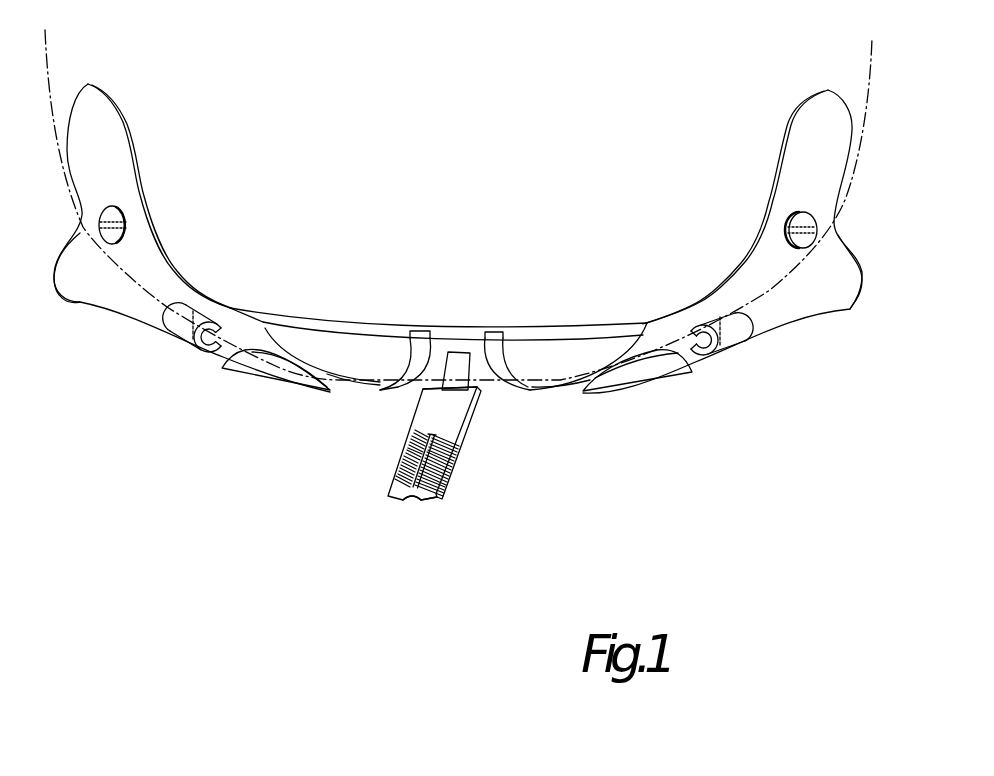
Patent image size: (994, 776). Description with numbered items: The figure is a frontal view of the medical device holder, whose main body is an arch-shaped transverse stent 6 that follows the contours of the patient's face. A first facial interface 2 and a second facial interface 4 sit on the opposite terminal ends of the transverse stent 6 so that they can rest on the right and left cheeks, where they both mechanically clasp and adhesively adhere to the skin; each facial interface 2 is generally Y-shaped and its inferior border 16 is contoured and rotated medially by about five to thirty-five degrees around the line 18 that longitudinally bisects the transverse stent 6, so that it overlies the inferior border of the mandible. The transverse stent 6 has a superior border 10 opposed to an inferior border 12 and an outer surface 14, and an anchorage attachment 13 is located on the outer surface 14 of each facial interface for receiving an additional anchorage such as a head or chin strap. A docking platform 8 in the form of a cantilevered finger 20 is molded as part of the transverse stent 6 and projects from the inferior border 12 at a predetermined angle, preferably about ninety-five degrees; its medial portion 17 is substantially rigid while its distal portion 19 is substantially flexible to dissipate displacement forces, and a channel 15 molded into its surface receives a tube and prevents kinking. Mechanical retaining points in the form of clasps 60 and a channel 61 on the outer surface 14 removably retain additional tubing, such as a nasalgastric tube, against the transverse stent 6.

The first facial interface 2 is at (116, 156).
The second facial interface 4 is at (834, 148).
The transverse stent 6 is at (369, 367).
The docking platform 8 is at (495, 430).
The superior border 10 is at (594, 325).
The inferior border 12 is at (270, 373).
The anchorage attachment 13 is at (106, 214).
The outer surface 14 is at (860, 300).
The channel 15 is at (430, 433).
The inferior border of the facial interface 16 is at (78, 300).
The medial portion 17 is at (436, 411).
The line longitudinally bisecting the transverse stent 18 is at (47, 60).
The distal portion 19 is at (443, 462).
The cantilevered finger 20 is at (428, 497).
The clasp 60 is at (177, 335).
The channel 61 is at (560, 387).